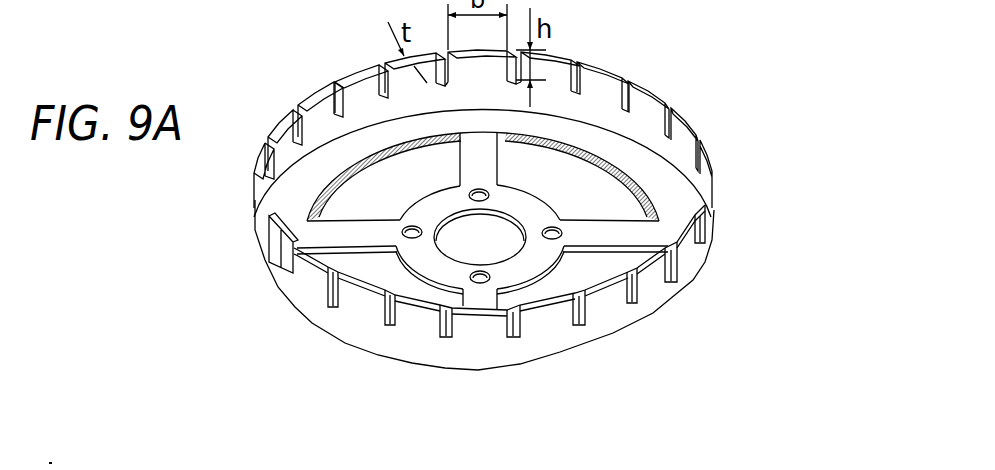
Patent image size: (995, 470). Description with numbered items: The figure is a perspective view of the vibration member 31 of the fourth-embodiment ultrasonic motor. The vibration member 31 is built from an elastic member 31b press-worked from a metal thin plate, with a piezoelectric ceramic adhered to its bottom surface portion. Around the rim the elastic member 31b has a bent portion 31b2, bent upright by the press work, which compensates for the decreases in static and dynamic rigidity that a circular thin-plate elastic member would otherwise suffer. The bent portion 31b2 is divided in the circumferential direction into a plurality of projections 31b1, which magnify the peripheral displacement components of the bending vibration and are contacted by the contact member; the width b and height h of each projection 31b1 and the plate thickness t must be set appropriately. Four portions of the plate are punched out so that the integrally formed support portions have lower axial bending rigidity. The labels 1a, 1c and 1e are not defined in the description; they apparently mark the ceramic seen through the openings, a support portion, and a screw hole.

The vibration member 31 is at (790, 175).
The elastic member 31b is at (663, 302).
The projections 31b1 is at (628, 70).
The bent portion 31b2 is at (695, 265).
The opening of plate 1a is at (376, 162).
The opening of plate 1c is at (489, 170).
The hole of plate 1e is at (554, 228).